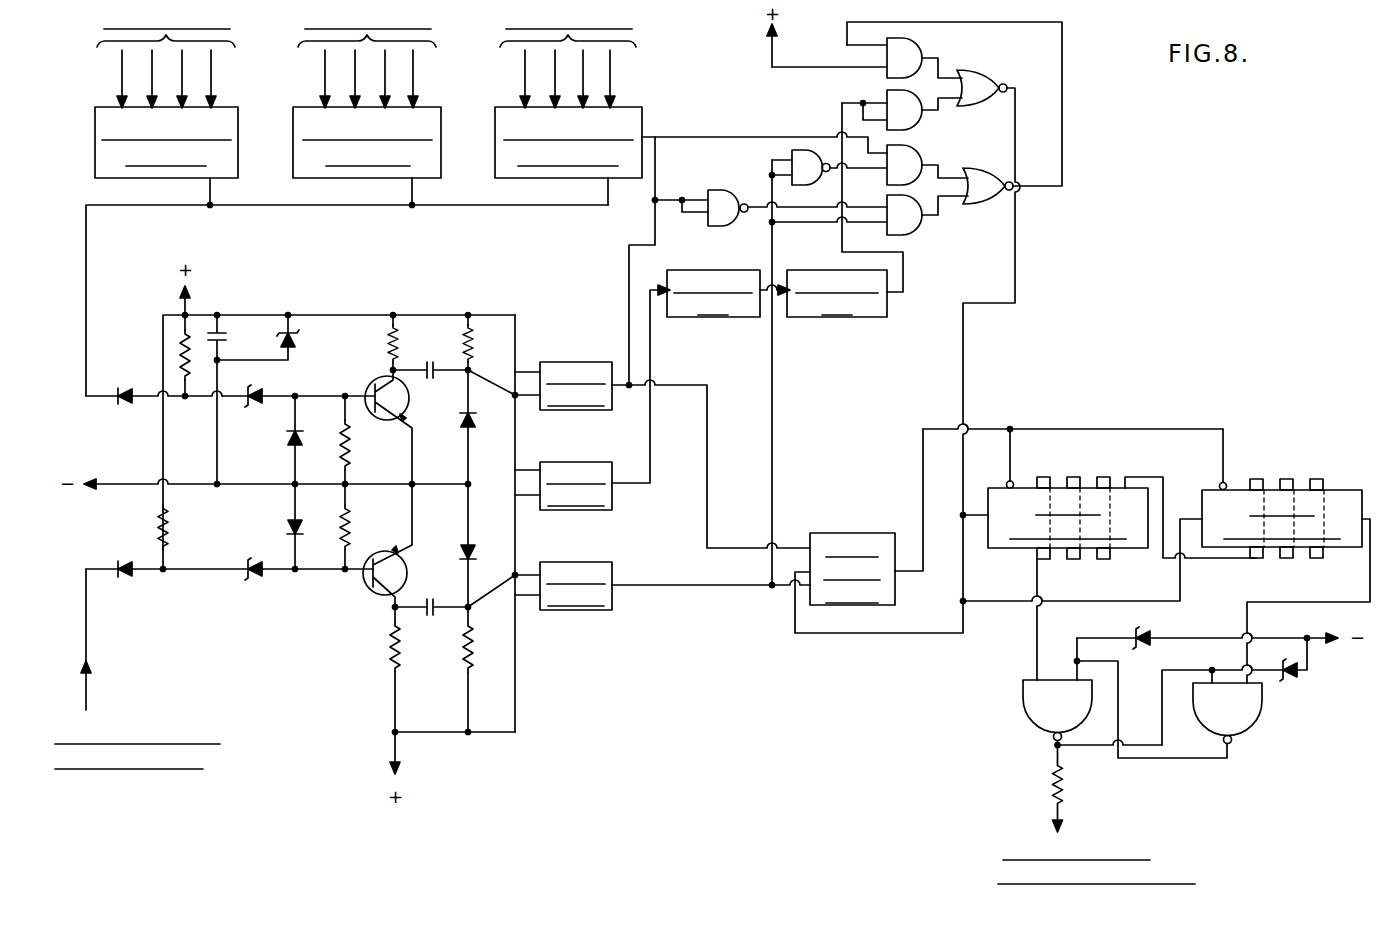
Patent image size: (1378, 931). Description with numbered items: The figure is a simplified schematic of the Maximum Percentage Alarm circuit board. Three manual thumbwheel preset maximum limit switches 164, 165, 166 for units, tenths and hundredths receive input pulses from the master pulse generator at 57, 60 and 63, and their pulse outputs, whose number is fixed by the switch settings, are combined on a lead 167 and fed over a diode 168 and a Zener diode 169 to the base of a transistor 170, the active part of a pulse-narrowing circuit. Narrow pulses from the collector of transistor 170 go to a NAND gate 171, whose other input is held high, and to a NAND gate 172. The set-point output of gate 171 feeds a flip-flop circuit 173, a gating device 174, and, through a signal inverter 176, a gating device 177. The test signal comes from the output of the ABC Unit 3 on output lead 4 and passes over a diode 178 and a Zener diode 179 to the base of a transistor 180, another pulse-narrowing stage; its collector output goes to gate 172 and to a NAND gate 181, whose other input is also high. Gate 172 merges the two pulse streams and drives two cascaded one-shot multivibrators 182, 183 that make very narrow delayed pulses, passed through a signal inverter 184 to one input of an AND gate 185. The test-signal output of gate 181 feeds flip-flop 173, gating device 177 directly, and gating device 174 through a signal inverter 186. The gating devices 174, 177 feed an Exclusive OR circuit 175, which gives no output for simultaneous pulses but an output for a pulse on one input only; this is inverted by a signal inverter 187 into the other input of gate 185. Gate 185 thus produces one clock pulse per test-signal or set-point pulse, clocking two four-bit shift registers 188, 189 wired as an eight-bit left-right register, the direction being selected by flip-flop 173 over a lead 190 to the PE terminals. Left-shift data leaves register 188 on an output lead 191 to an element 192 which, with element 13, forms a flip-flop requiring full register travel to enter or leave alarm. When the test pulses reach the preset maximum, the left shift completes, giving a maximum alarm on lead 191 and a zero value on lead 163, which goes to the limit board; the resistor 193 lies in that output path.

The ABC Unit 3 is at (140, 794).
The output lead 4 is at (88, 710).
The flip-flop element 13 is at (1262, 712).
The pulse input from master pulse generator 57 is at (152, 72).
The pulse input from master pulse generator 60 is at (355, 72).
The pulse input from master pulse generator 63 is at (553, 82).
The lead 163 is at (1068, 829).
The preset maximum limit switch (units) 164 is at (95, 140).
The preset maximum limit switch (tenths) 165 is at (293, 132).
The preset maximum limit switch (hundredths) 166 is at (495, 128).
The lead 167 is at (175, 206).
The diode 168 is at (118, 406).
The Zener diode 169 is at (250, 408).
The transistor 170 is at (368, 380).
The NAND gate 171 is at (568, 360).
The NAND gate 172 is at (580, 460).
The flip-flop circuit 173 is at (844, 532).
The gating device 174 is at (913, 150).
The Exclusive OR circuit 175 is at (990, 160).
The signal inverter 176 is at (716, 226).
The gating device 177 is at (910, 230).
The diode 178 is at (118, 564).
The Zener diode 179 is at (247, 586).
The transistor 180 is at (365, 593).
The NAND gate 181 is at (580, 562).
The one-shot multivibrator 182 is at (728, 320).
The one-shot multivibrator 183 is at (856, 320).
The signal inverter 184 is at (887, 95).
The AND gate 185 is at (1010, 62).
The signal inverter 186 is at (792, 156).
The signal inverter 187 is at (918, 41).
The four-bit shift register 188 is at (1086, 477).
The four-bit shift register 189 is at (1236, 480).
The lead 190 is at (990, 429).
The output lead 191 is at (1037, 632).
The flip-flop element 192 is at (1023, 703).
The resistor 193 is at (1050, 772).